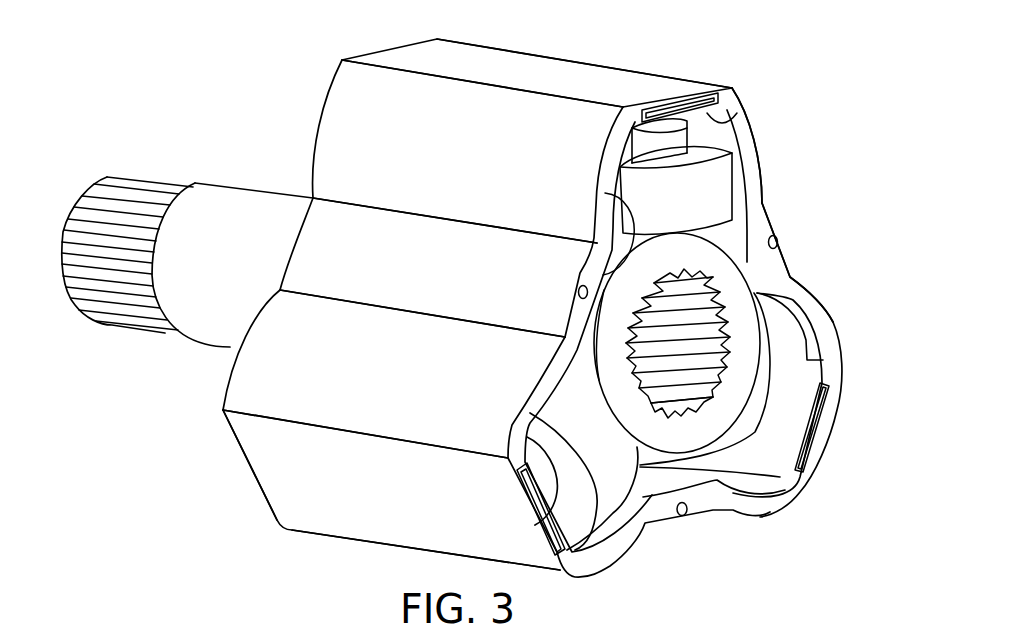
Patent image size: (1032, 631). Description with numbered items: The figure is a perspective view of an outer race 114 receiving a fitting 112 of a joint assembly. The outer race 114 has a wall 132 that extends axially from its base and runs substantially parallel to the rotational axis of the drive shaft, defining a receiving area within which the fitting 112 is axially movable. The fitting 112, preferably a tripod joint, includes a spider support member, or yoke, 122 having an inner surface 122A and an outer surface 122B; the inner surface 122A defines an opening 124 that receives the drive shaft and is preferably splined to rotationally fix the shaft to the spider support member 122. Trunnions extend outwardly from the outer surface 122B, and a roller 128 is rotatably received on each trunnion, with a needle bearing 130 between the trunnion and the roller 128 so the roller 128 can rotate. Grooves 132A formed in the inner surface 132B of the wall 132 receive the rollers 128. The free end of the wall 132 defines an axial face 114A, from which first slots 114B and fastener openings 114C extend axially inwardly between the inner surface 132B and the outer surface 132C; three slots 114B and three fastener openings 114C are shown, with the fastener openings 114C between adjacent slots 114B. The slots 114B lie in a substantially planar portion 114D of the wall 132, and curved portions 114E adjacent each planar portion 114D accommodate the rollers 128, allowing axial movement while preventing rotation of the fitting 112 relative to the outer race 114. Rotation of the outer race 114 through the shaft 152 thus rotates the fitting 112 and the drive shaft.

The fitting 112 is at (746, 269).
The outer race 114 is at (318, 114).
The axial face 114A is at (533, 390).
The first slots 114B is at (665, 107).
The fastener openings 114C is at (580, 290).
The planar portion 114D is at (428, 60).
The curved portions 114E is at (370, 143).
The spider support member 122 is at (803, 408).
The inner surface 122A is at (800, 469).
The outer surface 122B is at (595, 325).
The opening 124 is at (712, 342).
The roller 128 is at (733, 183).
The needle bearing 130 is at (687, 137).
The wall 132 is at (512, 68).
The grooves 132A is at (722, 114).
The inner surface 132B is at (605, 193).
The outer surface 132C is at (303, 468).
The shaft 152 is at (180, 337).